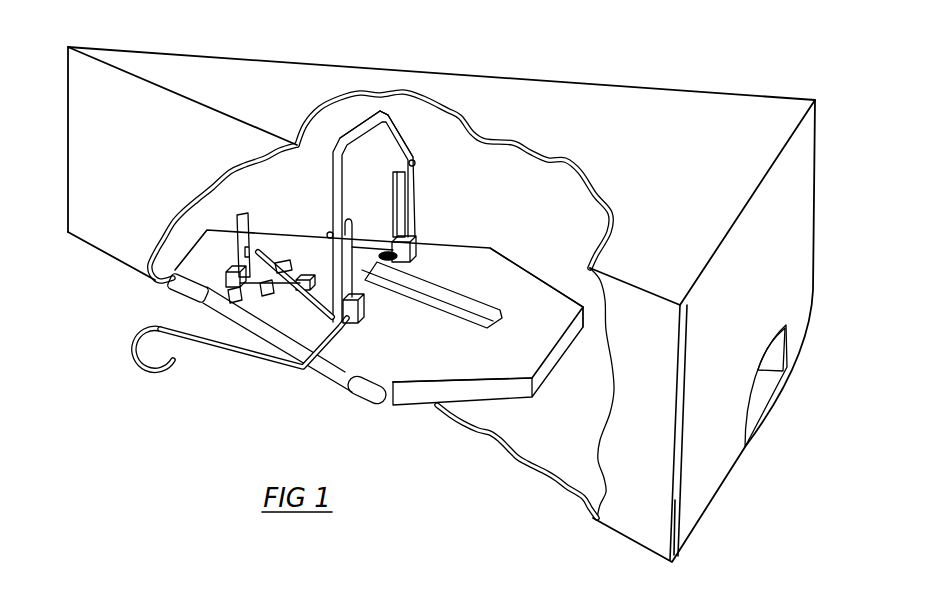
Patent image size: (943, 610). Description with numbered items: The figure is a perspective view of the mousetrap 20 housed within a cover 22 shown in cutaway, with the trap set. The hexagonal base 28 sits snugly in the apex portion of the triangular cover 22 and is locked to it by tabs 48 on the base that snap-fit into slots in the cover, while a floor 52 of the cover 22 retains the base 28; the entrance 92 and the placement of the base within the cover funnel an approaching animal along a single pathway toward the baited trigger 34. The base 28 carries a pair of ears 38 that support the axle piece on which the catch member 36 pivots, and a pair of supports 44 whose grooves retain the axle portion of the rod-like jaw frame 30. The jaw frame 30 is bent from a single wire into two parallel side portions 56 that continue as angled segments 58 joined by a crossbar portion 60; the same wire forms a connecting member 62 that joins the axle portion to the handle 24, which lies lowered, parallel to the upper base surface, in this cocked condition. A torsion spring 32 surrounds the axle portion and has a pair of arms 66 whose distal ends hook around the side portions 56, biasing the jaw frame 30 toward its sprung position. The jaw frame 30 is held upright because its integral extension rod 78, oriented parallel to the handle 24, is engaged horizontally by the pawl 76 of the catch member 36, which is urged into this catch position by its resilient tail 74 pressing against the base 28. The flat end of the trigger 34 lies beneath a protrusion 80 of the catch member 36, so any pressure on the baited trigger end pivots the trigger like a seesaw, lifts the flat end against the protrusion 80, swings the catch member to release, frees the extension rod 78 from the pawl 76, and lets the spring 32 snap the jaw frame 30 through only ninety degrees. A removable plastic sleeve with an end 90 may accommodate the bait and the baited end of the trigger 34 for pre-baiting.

The mousetrap 20 is at (468, 190).
The cover 22 is at (441, 288).
The handle 24 is at (150, 370).
The base 28 is at (443, 363).
The jaw frame 30 is at (410, 142).
The spring 32 is at (348, 217).
The trigger 34 is at (536, 287).
The catch member 36 is at (247, 218).
The ears 38 is at (233, 290).
The supports 44 is at (420, 240).
The tabs 48 is at (168, 295).
The floor 52 is at (572, 452).
The side portions 56 is at (413, 193).
The angled segments 58 is at (337, 168).
The crossbar portion 60 is at (360, 130).
The connecting member 62 is at (303, 370).
The arms 66 is at (393, 230).
The tail 74 is at (247, 287).
The pawl 76 is at (255, 230).
The jaw frame extension rod 78 is at (230, 230).
The protrusion 80 is at (277, 257).
The end of plastic sleeve 90 is at (462, 360).
The entrance 92 is at (767, 397).